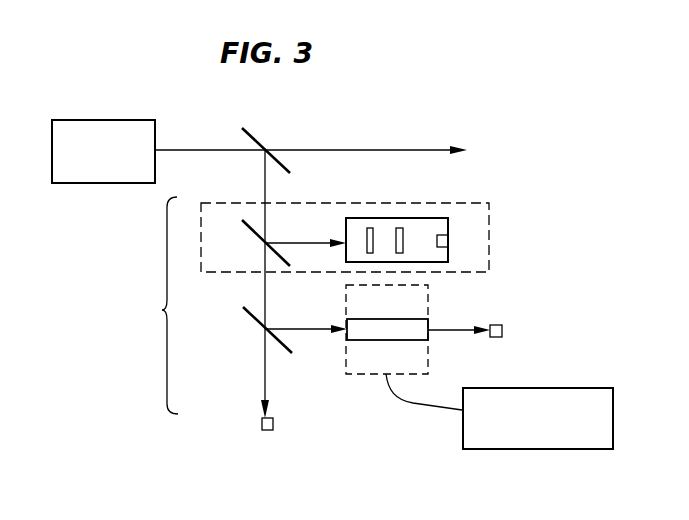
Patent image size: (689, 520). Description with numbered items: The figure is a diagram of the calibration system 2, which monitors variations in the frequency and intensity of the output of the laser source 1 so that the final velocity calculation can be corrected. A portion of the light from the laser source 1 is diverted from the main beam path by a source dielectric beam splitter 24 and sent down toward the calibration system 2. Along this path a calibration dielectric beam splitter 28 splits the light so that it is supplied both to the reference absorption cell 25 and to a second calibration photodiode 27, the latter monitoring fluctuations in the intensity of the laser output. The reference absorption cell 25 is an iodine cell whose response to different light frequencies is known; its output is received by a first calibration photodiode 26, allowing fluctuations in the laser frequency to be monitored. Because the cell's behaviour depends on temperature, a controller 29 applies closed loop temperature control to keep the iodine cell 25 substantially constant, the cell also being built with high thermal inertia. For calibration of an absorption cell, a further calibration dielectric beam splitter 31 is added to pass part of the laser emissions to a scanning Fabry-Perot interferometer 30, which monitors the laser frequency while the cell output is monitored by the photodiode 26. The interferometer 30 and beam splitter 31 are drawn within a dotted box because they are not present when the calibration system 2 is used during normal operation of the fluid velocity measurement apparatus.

The laser source 1 is at (76, 120).
The calibration system 2 is at (162, 310).
The source dielectric beam splitter 24 is at (262, 142).
The reference absorption cell 25 is at (420, 326).
The first calibration photodiode 26 is at (502, 330).
The second calibration photodiode 27 is at (273, 423).
The calibration dielectric beam splitter 28 is at (262, 330).
The controller 29 is at (515, 450).
The scanning Fabry-Perot interferometer 30 is at (438, 225).
The further calibration dielectric beam splitter 31 is at (250, 226).